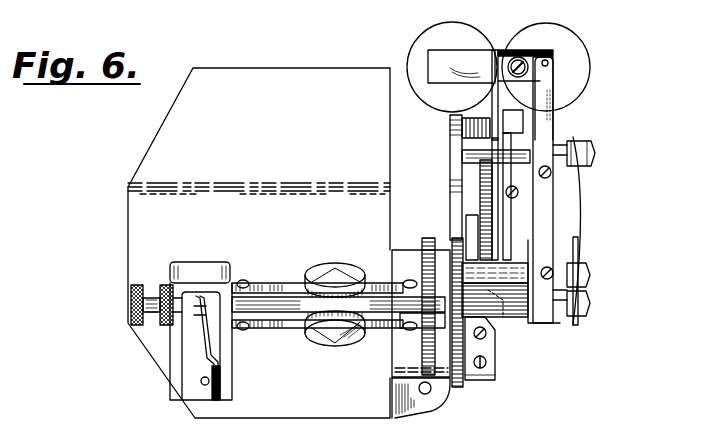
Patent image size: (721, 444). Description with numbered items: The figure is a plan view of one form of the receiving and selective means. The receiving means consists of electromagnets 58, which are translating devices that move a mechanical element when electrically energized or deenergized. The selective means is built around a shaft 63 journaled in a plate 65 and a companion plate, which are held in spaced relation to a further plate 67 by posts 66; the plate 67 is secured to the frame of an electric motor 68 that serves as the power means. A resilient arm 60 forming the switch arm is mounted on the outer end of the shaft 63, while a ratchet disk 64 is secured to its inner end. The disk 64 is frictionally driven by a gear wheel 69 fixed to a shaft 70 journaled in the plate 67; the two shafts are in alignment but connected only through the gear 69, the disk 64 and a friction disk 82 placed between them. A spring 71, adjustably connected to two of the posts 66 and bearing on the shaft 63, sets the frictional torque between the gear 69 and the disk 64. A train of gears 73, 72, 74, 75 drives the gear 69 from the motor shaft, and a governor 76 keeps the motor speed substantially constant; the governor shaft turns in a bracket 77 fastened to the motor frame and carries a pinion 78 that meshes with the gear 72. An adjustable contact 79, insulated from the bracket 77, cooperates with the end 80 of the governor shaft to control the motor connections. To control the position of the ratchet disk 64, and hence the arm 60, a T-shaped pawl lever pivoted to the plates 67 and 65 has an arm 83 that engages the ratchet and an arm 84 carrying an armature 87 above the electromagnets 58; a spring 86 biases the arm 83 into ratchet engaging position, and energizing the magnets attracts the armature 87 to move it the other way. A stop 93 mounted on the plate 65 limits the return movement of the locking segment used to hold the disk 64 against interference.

The electromagnets 58 is at (498, 67).
The armature 87 is at (461, 66).
The arm 84 is at (495, 100).
The spring 86 is at (477, 120).
The gear wheel 69 is at (483, 178).
The plate 67 is at (458, 174).
The friction disk 82 is at (492, 187).
The arm 83 is at (497, 195).
The shaft 70 is at (466, 223).
The electric motor 68 is at (259, 243).
The bracket 77 is at (234, 278).
The gear 73 is at (392, 250).
The gear 72 is at (421, 307).
The gear 75 is at (483, 297).
The ratchet disk 64 is at (495, 262).
The stop 93 is at (545, 190).
The spring 71 is at (576, 192).
The shaft 63 is at (570, 225).
The resilient arm 60 is at (570, 250).
The adjustable contact 79 is at (200, 322).
The end of the governor shaft 80 is at (213, 304).
The governor 76 is at (296, 327).
The pinion 78 is at (420, 332).
The gear 74 is at (480, 348).
The posts 66 is at (518, 284).
The plate 65 is at (532, 324).